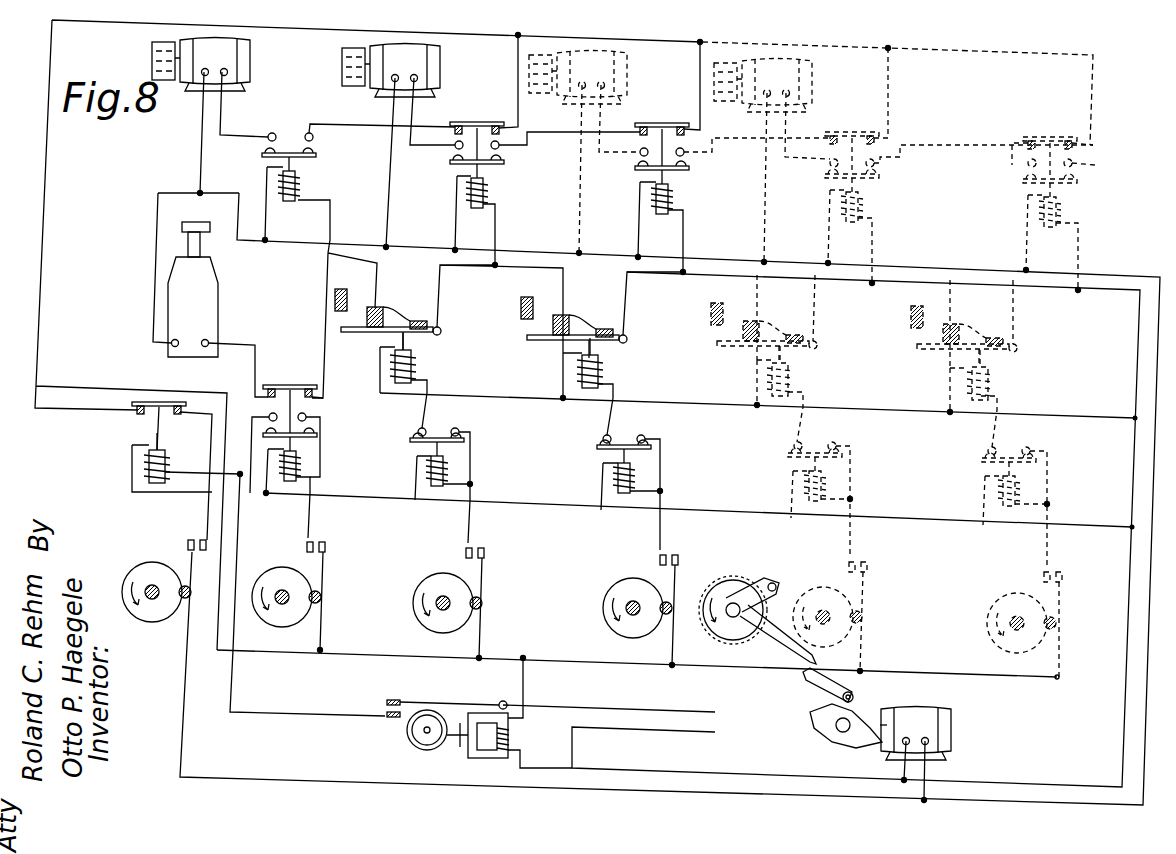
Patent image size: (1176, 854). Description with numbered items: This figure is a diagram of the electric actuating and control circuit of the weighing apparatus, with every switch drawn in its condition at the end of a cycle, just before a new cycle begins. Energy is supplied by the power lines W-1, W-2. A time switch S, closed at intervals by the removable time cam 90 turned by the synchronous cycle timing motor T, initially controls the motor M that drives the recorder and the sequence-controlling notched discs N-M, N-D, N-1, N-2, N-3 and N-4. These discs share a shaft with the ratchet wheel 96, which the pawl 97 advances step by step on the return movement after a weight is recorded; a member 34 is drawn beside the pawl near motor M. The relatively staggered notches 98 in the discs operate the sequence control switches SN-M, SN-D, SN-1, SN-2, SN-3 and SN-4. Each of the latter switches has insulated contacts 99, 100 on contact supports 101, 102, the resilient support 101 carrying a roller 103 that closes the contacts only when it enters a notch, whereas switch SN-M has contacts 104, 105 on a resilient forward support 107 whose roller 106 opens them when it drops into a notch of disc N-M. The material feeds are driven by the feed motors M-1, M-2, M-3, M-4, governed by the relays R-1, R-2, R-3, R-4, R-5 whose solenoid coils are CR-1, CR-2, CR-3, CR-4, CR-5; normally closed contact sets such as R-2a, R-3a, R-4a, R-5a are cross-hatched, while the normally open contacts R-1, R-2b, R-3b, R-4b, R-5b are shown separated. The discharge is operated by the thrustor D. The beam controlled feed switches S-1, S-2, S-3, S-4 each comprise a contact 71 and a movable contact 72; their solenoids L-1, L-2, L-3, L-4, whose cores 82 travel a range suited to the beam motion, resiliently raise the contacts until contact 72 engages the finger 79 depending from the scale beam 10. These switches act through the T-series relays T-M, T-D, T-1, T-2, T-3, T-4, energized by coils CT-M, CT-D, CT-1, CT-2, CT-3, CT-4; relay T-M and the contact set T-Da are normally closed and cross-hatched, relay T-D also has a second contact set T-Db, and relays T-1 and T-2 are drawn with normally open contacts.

The electric power line W-1 is at (564, 362).
The electric power line W-2 is at (670, 499).
The feed motor M-1 is at (252, 62).
The feed motor M-2 is at (442, 70).
The feed motor M-3 is at (630, 72).
The feed motor M-4 is at (815, 80).
The motor M is at (950, 722).
The relay switch contacts R-1 is at (326, 155).
The relay solenoid coil CR-1 is at (298, 186).
The relay switch R-2 is at (510, 164).
The normally closed relay contacts R-2a is at (456, 118).
The normally open relay contacts R-2b is at (452, 152).
The relay solenoid coil CR-2 is at (485, 191).
The relay switch R-3 is at (694, 168).
The normally closed relay contacts R-3a is at (640, 124).
The normally open relay contacts R-3b is at (640, 158).
The relay solenoid coil CR-3 is at (670, 196).
The relay switch R-4 is at (882, 177).
The normally closed relay contacts R-4a is at (824, 132).
The normally open relay contacts R-4b is at (828, 166).
The relay solenoid coil CR-4 is at (866, 206).
The relay switch R-5 is at (1080, 181).
The normally closed relay contacts R-5a is at (1026, 138).
The normally open relay contacts R-5b is at (1026, 170).
The relay solenoid coil CR-5 is at (1063, 209).
The discharge operating thrustor D is at (210, 295).
The feed controlling switch S-1 is at (393, 303).
The feed controlling switch S-2 is at (585, 315).
The feed controlling switch S-3 is at (773, 321).
The feed controlling switch S-4 is at (971, 325).
The solenoid L-1 is at (412, 363).
The solenoid L-2 is at (600, 368).
The solenoid L-3 is at (792, 376).
The solenoid L-4 is at (992, 383).
The scale beam 10 is at (910, 322).
The contact 71 is at (370, 312).
The contact 72 is at (366, 334).
The finger 79 is at (522, 318).
The solenoid core 82 is at (950, 398).
The relay T-M is at (140, 418).
The relay solenoid coil CT-M is at (132, 461).
The relay T-D is at (326, 407).
The normally closed relay contacts T-Da is at (268, 392).
The relay contacts T-Db is at (318, 440).
The relay solenoid coil CT-D is at (312, 485).
The relay T-1 is at (410, 434).
The relay solenoid coil CT-1 is at (417, 476).
The relay T-2 is at (596, 439).
The relay solenoid coil CT-2 is at (603, 480).
The relay T-3 is at (792, 445).
The relay solenoid coil CT-3 is at (793, 486).
The relay T-4 is at (986, 451).
The relay solenoid coil CT-4 is at (985, 494).
The notched disc N-M is at (157, 560).
The sequence control switch SN-M is at (203, 533).
The notched disc N-D is at (290, 568).
The sequence control switch SN-D is at (323, 533).
The notched disc N-1 is at (416, 582).
The sequence control switch SN-1 is at (483, 541).
The notched disc N-2 is at (606, 588).
The sequence control switch SN-2 is at (674, 551).
The notched disc N-3 is at (830, 568).
The sequence control switch SN-3 is at (860, 560).
The notched disc N-4 is at (1028, 566).
The sequence control switch SN-4 is at (1058, 568).
The notch 98 is at (295, 556).
The insulated contact 99 is at (328, 552).
The insulated contact 100 is at (310, 538).
The contact support 101 is at (322, 576).
The contact support 102 is at (306, 511).
The roller 103 is at (488, 604).
The contact 104 is at (207, 575).
The contact 105 is at (190, 540).
The roller 106 is at (188, 596).
The forward contact support 107 is at (186, 622).
The ratchet wheel 96 is at (732, 580).
The pawl 97 is at (770, 580).
The cam 34 is at (826, 730).
The time switch S is at (382, 708).
The time cam 90 is at (406, 732).
The cycle timing motor T is at (462, 762).